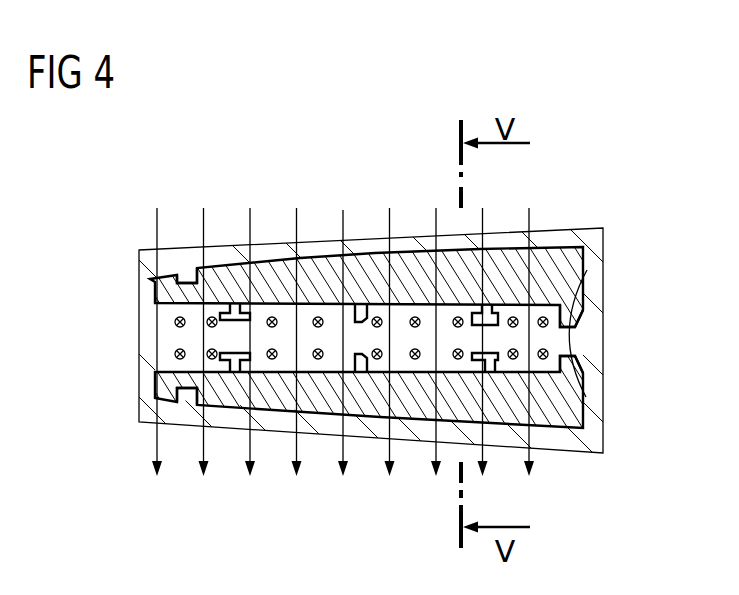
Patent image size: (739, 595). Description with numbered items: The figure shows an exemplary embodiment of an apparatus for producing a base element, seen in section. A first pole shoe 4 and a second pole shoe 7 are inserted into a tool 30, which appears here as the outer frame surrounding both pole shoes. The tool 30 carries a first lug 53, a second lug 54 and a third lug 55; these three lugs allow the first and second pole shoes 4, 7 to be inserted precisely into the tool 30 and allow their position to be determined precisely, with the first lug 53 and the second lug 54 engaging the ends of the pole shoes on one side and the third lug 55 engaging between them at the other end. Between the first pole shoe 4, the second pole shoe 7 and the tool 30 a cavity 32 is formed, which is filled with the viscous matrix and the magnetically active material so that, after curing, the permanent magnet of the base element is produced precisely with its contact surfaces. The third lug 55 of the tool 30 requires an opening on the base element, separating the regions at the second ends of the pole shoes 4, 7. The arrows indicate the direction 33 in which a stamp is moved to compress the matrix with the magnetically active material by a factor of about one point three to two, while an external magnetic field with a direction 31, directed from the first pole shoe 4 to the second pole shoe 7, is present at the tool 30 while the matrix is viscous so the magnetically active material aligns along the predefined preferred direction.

The tool 30 is at (603, 238).
The first pole shoe 4 is at (567, 277).
The second pole shoe 7 is at (570, 393).
The cavity 32 is at (548, 345).
The direction 33 is at (277, 300).
The third lug 55 is at (577, 330).
The first lug 53 is at (193, 276).
The second lug 54 is at (187, 406).
The direction 31 is at (343, 210).